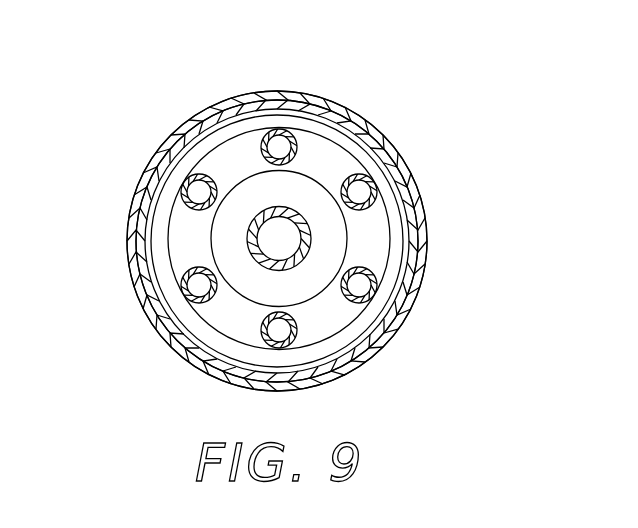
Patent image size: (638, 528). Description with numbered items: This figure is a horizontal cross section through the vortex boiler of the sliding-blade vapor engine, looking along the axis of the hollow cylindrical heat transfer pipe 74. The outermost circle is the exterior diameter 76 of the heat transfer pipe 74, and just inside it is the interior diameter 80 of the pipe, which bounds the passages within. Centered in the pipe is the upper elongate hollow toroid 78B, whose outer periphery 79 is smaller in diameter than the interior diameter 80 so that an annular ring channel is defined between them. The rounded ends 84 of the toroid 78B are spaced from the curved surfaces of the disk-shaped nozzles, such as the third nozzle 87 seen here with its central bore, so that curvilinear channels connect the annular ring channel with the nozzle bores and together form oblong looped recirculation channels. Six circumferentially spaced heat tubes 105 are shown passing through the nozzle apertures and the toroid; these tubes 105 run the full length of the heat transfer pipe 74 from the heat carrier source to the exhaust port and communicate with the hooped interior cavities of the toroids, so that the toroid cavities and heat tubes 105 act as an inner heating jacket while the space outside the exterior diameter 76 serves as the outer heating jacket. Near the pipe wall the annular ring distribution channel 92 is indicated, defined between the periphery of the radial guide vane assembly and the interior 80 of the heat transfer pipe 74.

The heat transfer pipe 74 is at (424, 141).
The exterior diameter of the heat transfer pipe 76 is at (298, 93).
The upper elongate hollow toroid 78B is at (322, 241).
The outer periphery of the toroids 79 is at (387, 265).
The interior diameter of the heat transfer pipe 80 is at (416, 190).
The rounded ends of the toroids 84 is at (380, 242).
The third disk-shaped nozzle 87 is at (250, 237).
The annular ring distribution channel 92 is at (224, 128).
The heat tubes 105 is at (311, 140).